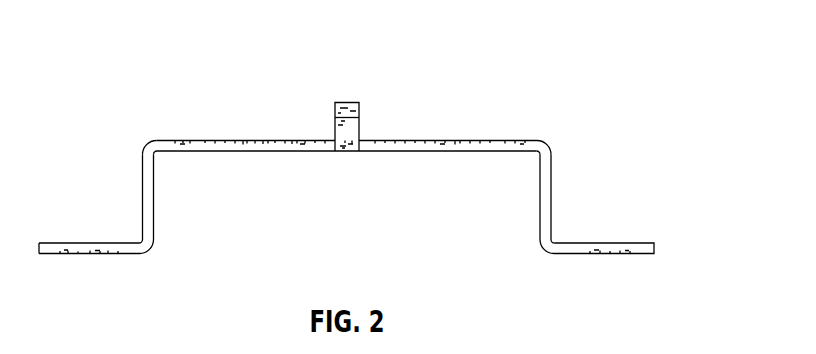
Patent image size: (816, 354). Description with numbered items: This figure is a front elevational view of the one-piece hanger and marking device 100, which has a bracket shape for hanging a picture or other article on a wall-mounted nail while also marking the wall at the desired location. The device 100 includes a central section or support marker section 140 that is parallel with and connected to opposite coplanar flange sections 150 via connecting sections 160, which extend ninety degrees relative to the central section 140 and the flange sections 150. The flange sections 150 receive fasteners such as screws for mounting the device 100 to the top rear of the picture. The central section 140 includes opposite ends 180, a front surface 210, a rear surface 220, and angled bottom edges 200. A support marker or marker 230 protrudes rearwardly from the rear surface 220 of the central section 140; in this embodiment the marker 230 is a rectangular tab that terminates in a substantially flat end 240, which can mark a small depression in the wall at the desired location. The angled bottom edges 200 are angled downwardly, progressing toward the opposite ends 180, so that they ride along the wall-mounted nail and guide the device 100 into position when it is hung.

The one-piece hanger and marking device 100 is at (161, 43).
The central section 140 is at (496, 137).
The flange sections 150 is at (619, 265).
The connecting sections 160 is at (556, 198).
The opposite ends 180 is at (145, 140).
The angled bottom edges 200 is at (245, 151).
The front surface 210 is at (294, 151).
The rear surface 220 is at (265, 140).
The support marker 230 is at (364, 128).
The flat end 240 is at (350, 103).